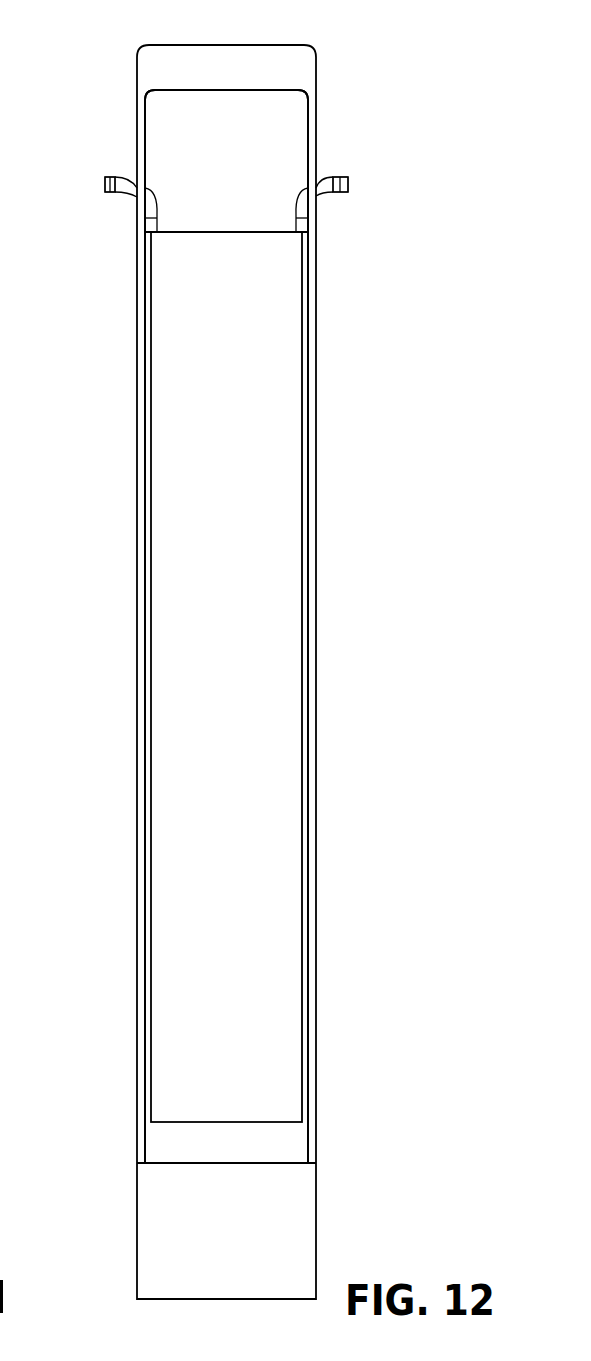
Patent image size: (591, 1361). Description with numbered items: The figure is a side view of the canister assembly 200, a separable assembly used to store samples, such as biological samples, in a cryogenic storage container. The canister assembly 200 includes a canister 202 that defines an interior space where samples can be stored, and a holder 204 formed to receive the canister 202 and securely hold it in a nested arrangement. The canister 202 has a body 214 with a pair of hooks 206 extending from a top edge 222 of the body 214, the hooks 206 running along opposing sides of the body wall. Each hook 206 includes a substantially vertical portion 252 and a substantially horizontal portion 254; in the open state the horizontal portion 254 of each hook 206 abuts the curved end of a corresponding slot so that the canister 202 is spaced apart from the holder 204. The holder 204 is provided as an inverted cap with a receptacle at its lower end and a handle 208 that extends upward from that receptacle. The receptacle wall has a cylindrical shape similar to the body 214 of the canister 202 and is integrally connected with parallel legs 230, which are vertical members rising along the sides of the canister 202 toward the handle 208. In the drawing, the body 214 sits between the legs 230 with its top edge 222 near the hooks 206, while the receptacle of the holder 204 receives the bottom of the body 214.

The canister assembly 200 is at (368, 40).
The canister 202 is at (180, 678).
The holder 204 is at (157, 1213).
The hooks 206 is at (103, 176).
The handle 208 is at (218, 63).
The body 214 is at (226, 626).
The top edge 222 is at (240, 230).
The parallel legs 230 is at (141, 945).
The substantially vertical portion 252 is at (160, 220).
The substantially horizontal portion 254 is at (226, 184).